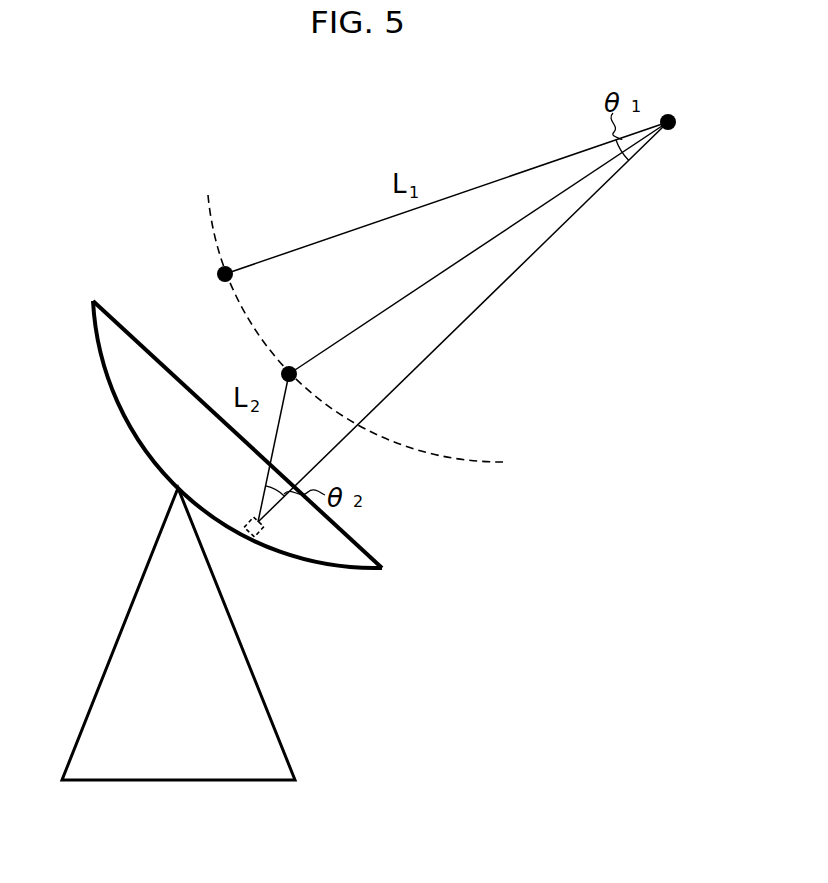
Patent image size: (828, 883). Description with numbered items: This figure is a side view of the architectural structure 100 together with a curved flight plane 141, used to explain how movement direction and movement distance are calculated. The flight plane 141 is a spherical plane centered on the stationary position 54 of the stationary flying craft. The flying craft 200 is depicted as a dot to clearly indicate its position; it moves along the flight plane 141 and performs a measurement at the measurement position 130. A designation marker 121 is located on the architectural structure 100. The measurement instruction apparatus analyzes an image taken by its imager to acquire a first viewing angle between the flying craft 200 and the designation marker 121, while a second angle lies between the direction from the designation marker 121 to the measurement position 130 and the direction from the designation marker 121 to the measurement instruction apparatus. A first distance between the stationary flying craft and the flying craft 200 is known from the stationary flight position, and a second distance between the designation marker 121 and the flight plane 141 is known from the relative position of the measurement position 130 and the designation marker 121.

The stationary position 54 is at (667, 113).
The architectural structure 100 is at (94, 300).
The designation marker 121 is at (256, 540).
The measurement position 130 is at (291, 366).
The flight plane 141 is at (208, 195).
The flying craft 200 is at (234, 268).